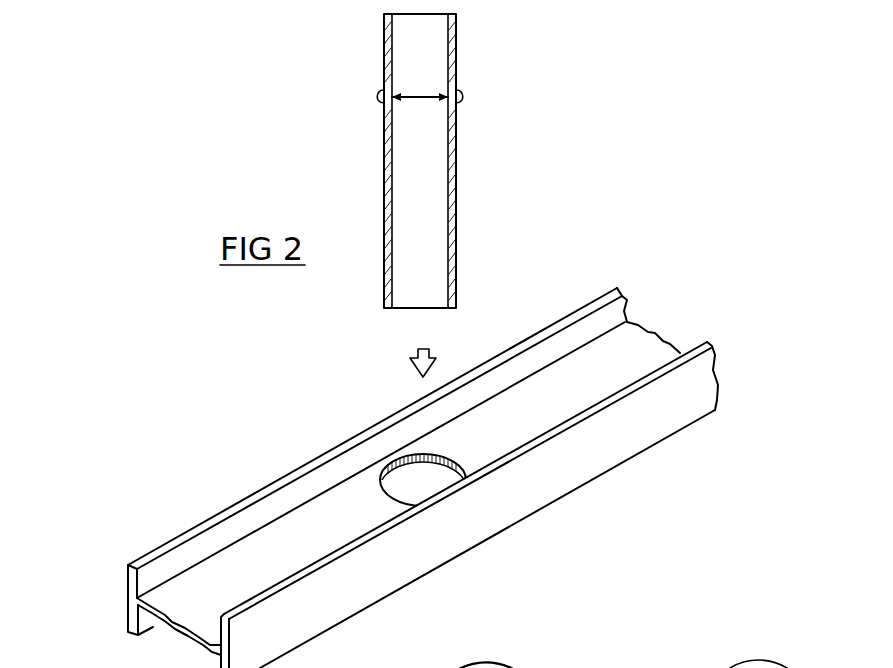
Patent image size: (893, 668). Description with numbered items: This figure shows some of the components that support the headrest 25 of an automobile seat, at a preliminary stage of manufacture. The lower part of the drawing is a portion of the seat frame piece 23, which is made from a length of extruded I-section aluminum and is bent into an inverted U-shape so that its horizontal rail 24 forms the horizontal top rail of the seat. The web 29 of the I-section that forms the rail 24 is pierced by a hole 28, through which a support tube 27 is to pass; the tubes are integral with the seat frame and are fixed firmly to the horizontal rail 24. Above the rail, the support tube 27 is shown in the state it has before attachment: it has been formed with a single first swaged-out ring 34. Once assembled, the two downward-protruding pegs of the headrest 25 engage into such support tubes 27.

The seat frame piece 23 is at (423, 476).
The horizontal rail 24 is at (640, 340).
The headrest 25 is at (697, 667).
The support tube 27 is at (437, 153).
The hole 28 is at (421, 483).
The web 29 is at (313, 518).
The first swaged-out ring 34 is at (460, 97).